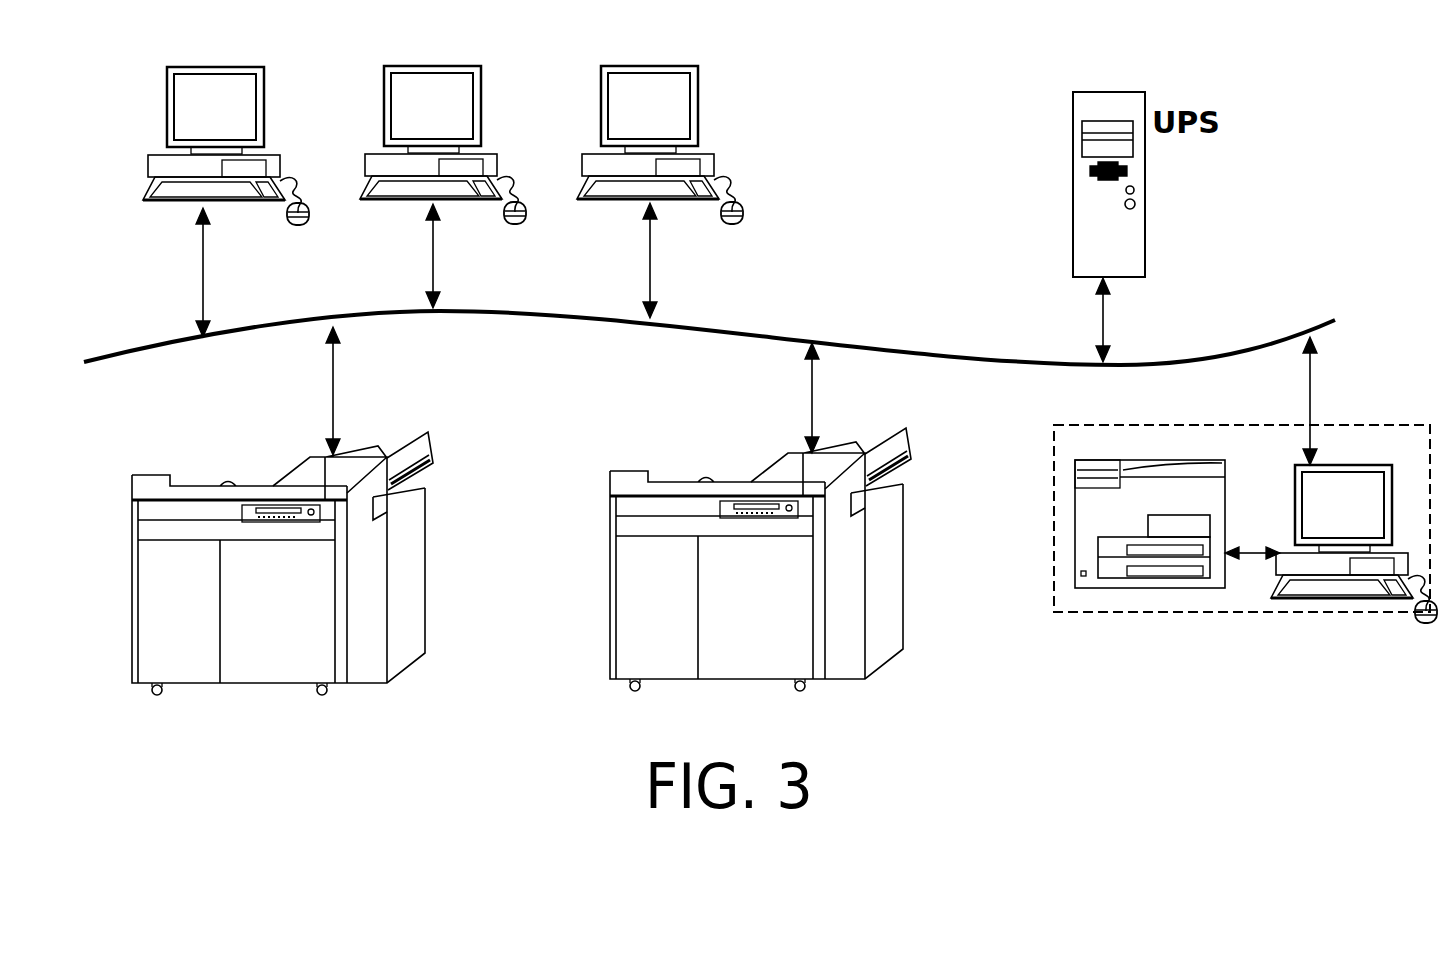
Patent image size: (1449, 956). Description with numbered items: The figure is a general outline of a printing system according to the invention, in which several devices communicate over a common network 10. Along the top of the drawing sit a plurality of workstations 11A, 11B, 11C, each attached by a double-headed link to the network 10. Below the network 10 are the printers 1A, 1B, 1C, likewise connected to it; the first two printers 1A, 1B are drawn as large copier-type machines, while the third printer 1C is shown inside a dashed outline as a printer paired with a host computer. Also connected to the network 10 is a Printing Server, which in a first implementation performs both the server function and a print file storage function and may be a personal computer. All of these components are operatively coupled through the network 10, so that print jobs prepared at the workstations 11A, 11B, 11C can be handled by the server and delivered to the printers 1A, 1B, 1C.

The network 10 is at (915, 345).
The workstation 11A is at (305, 97).
The workstation 11B is at (523, 113).
The workstation 11C is at (697, 90).
The printer 1A is at (425, 597).
The printer 1B is at (905, 590).
The printer 1C is at (1053, 542).